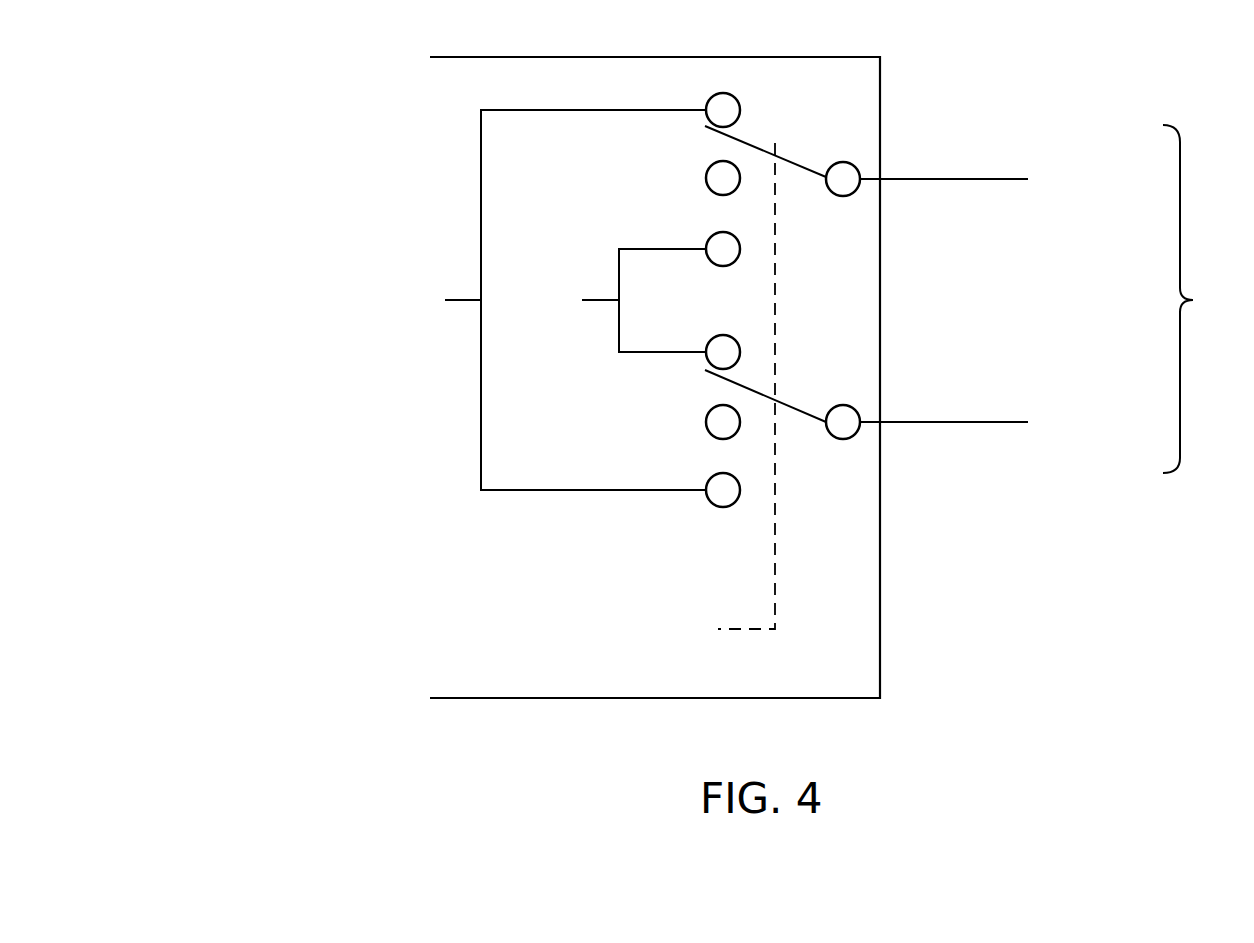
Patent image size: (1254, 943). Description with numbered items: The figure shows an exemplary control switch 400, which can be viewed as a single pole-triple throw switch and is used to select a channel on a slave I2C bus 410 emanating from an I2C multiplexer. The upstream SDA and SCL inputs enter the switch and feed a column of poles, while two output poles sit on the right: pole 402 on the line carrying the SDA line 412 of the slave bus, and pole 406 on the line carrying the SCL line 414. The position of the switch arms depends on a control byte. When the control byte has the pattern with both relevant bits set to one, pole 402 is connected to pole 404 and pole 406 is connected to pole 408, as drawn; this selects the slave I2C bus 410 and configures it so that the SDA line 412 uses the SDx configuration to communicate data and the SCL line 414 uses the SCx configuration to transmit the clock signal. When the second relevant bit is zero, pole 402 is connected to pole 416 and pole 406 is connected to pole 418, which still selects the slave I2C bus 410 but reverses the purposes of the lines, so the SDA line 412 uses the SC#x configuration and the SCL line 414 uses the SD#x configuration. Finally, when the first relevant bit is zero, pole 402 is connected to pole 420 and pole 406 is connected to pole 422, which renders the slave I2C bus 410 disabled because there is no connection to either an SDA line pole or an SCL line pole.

The control switch 400 is at (347, 80).
The pole 402 is at (843, 162).
The pole 404 is at (699, 102).
The pole 406 is at (843, 405).
The pole 408 is at (699, 362).
The slave I2C bus 410 is at (1206, 299).
The SDA line 412 is at (1034, 165).
The SCL line 414 is at (1034, 406).
The pole 416 is at (699, 240).
The pole 418 is at (699, 498).
The pole 420 is at (699, 175).
The pole 422 is at (699, 426).